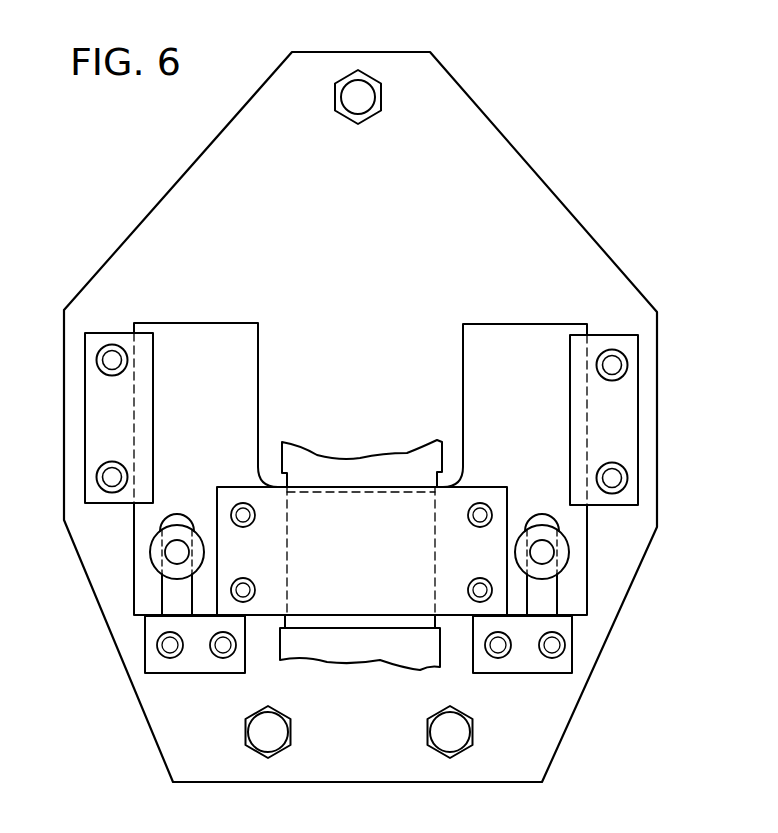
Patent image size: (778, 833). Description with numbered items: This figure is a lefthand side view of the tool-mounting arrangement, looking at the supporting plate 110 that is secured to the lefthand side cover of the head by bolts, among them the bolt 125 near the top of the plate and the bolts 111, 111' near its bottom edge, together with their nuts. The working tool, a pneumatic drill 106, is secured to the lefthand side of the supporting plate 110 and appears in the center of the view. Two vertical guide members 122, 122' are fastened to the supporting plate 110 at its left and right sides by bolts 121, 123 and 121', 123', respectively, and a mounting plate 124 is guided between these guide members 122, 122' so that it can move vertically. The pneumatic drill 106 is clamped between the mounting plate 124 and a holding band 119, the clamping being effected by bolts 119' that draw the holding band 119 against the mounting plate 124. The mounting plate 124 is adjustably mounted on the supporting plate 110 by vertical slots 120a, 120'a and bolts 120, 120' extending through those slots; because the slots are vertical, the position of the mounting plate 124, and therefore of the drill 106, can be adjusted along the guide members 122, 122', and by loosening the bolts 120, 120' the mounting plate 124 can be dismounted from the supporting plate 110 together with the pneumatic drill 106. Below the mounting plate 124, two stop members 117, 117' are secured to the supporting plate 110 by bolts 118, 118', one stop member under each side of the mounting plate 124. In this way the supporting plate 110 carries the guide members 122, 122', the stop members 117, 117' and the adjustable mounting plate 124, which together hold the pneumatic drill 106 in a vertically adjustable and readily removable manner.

The pneumatic drill 106 is at (357, 452).
The supporting plate 110 is at (518, 188).
The bolt 111 is at (454, 769).
The bolt 111' is at (275, 769).
The stop member 117 is at (561, 656).
The stop member 117' is at (155, 654).
The bolt 118 is at (557, 682).
The bolt 118' is at (163, 680).
The holding band 119 is at (348, 512).
The bolt 119' is at (486, 512).
The bolt 120 is at (598, 566).
The bolt 120' is at (118, 563).
The vertical slot 120a is at (557, 600).
The vertical slot 120'a is at (111, 589).
The bolt 121 is at (647, 521).
The bolt 121' is at (77, 515).
The vertical guide member 122 is at (634, 386).
The vertical guide member 122' is at (90, 386).
The bolt 123 is at (590, 332).
The bolt 123' is at (146, 323).
The mounting plate 124 is at (495, 324).
The bolt 125 is at (358, 124).